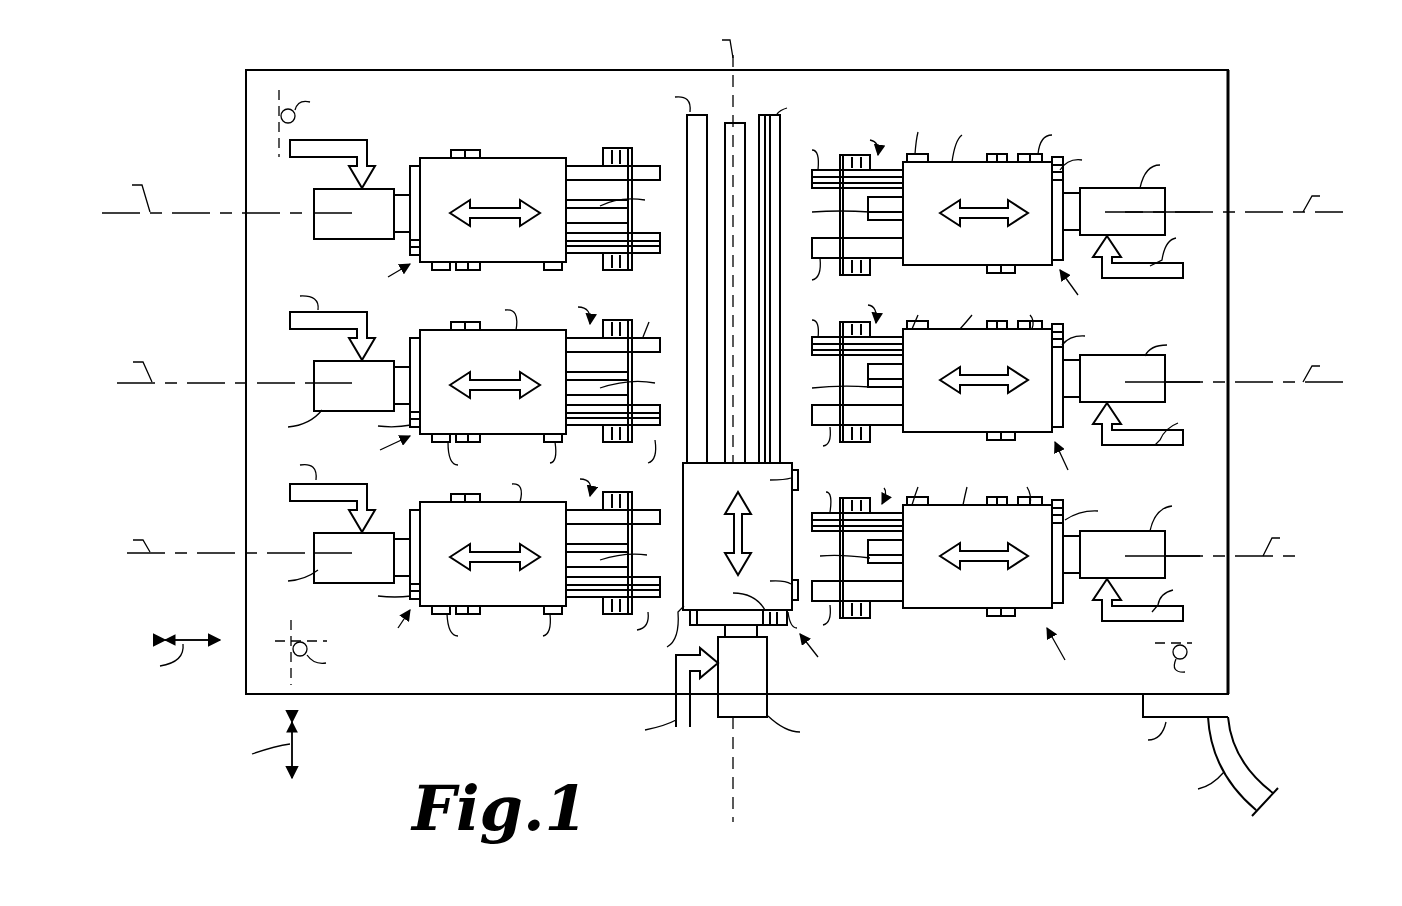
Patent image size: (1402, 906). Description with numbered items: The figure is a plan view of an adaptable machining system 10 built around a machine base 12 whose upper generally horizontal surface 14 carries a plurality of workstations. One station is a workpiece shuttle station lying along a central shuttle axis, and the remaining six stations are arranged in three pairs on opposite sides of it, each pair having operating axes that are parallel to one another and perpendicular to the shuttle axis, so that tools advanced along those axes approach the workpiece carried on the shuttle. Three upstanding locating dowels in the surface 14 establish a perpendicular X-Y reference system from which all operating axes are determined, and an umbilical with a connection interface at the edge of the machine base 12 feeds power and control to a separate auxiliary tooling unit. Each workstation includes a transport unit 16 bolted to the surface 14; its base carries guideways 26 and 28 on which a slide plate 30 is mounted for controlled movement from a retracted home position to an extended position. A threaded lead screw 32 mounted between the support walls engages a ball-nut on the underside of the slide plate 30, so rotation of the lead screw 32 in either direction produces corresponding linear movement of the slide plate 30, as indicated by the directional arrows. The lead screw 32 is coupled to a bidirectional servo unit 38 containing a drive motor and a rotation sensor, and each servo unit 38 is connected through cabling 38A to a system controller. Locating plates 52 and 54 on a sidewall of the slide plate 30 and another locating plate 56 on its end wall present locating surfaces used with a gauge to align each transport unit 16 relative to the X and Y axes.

The adaptable machining system 10 is at (1242, 68).
The machine base 12 is at (1229, 150).
The upper surface 14 is at (1020, 80).
The transport unit 16 is at (590, 152).
The guideway 26 is at (643, 165).
The guideway 28 is at (651, 255).
The slide plate 30 is at (508, 157).
The lead screw 32 is at (735, 121).
The servo unit 38 is at (318, 240).
The cabling 38A is at (362, 136).
The locating plate 52 is at (551, 272).
The locating plate 54 is at (441, 272).
The locating plate 56 is at (411, 250).